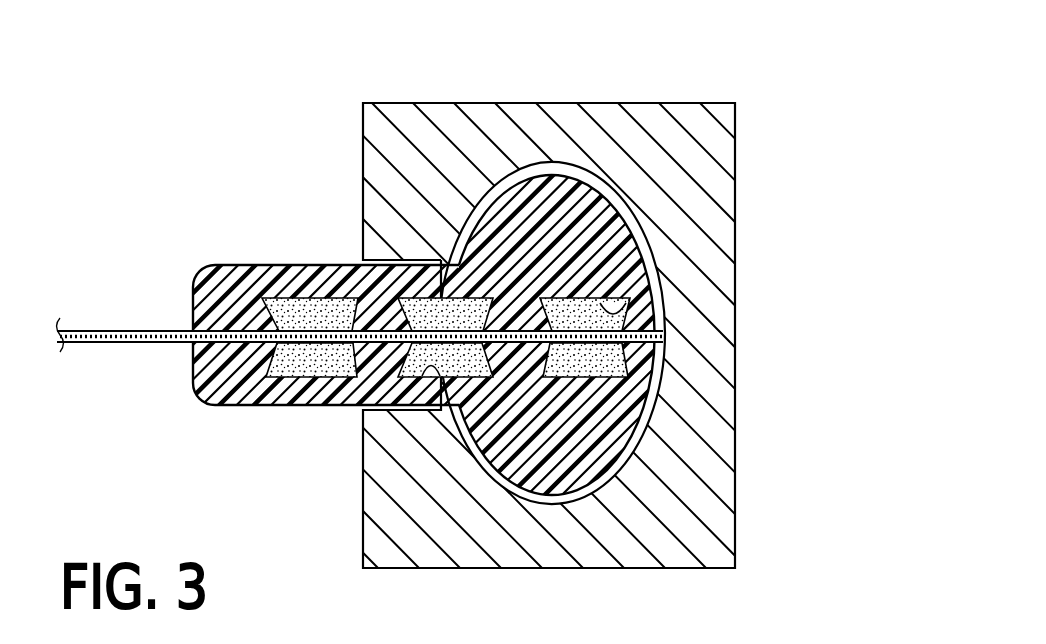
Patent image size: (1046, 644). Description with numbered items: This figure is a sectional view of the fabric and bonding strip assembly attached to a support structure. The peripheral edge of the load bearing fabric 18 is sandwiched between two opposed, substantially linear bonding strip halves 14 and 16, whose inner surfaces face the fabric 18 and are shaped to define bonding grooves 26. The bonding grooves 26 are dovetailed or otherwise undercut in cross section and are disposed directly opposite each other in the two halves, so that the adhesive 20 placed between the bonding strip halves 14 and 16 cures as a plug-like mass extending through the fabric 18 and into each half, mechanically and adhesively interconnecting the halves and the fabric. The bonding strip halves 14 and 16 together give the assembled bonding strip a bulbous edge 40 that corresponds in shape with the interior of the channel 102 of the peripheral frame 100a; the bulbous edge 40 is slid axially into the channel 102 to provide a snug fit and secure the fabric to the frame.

The bonding strip half 14 is at (227, 265).
The bonding strip half 16 is at (250, 405).
The fabric 18 is at (98, 343).
The adhesive 20 is at (307, 303).
The bonding grooves 26 is at (627, 307).
The bulbous edge 40 is at (585, 180).
The block 100a is at (735, 150).
The channel 102 is at (640, 440).